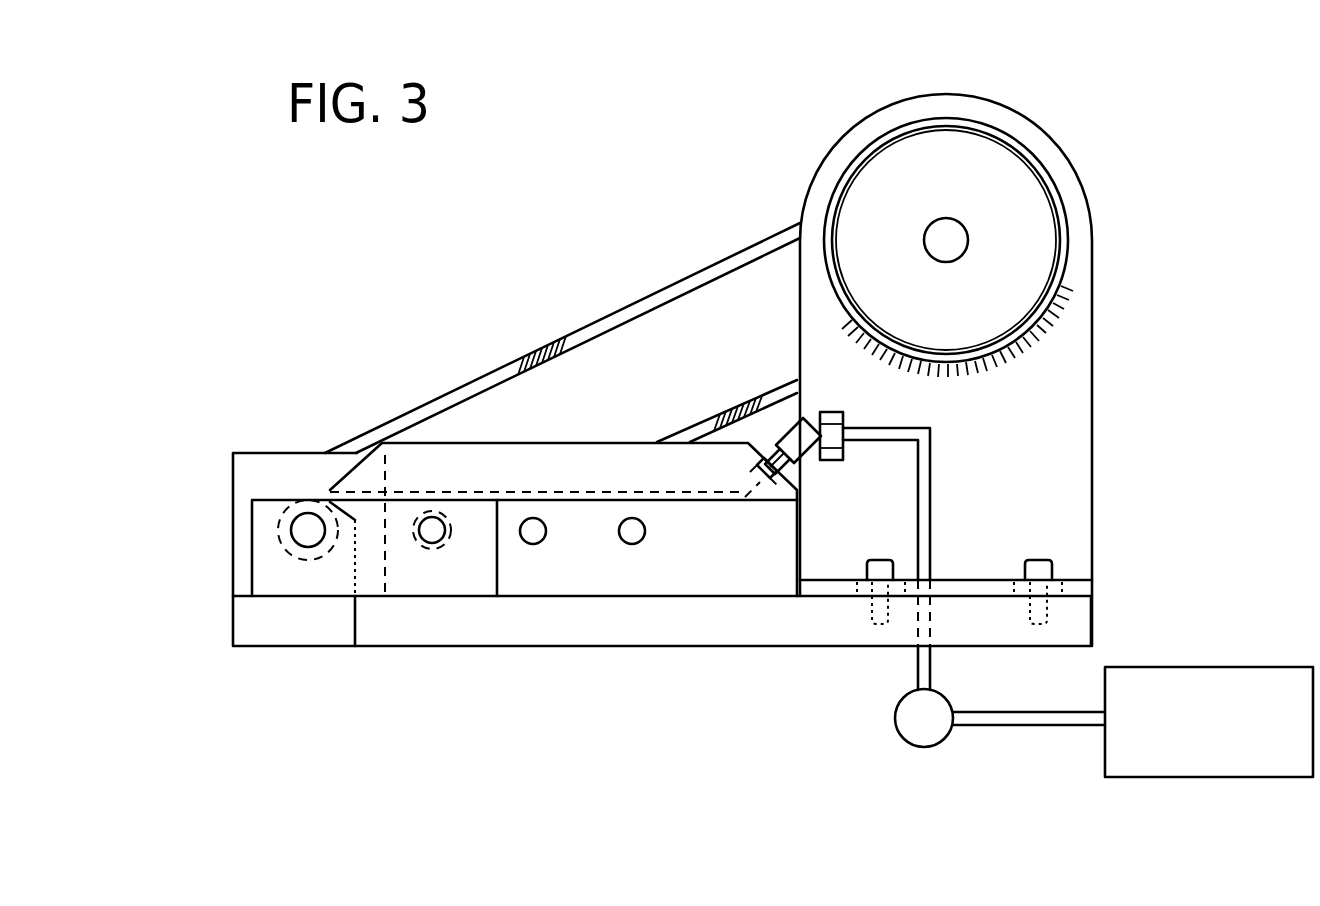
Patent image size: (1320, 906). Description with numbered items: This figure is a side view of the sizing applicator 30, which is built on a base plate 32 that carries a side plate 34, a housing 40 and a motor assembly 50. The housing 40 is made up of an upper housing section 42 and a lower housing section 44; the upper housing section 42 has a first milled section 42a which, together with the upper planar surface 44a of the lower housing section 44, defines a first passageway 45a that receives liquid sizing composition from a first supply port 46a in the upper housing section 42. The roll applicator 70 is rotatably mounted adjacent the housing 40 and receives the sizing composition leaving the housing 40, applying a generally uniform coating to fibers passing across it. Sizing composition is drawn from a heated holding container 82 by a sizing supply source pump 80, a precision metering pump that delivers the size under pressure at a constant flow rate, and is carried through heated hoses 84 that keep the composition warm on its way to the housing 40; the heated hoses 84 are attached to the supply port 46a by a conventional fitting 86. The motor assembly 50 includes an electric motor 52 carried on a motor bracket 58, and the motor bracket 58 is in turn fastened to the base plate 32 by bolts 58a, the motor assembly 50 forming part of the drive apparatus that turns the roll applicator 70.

The sizing applicator 30 is at (1131, 313).
The base plate 32 is at (430, 627).
The side plate 34 is at (307, 577).
The housing 40 is at (667, 473).
The upper housing section 42 is at (613, 455).
The first milled section 42a is at (425, 500).
The lower housing section 44 is at (547, 578).
The upper planar surface 44a is at (450, 492).
The first passageway 45a is at (548, 492).
The first supply port 46a is at (788, 497).
The motor assembly 50 is at (1039, 108).
The electric motor 52 is at (1025, 175).
The motor bracket 58 is at (1068, 390).
The bolts 58a is at (883, 567).
The roll applicator 70 is at (272, 543).
The sizing supply source pump 80 is at (933, 737).
The holding container 82 is at (1200, 768).
The heated hoses 84 is at (930, 668).
The fittings 86 is at (810, 425).